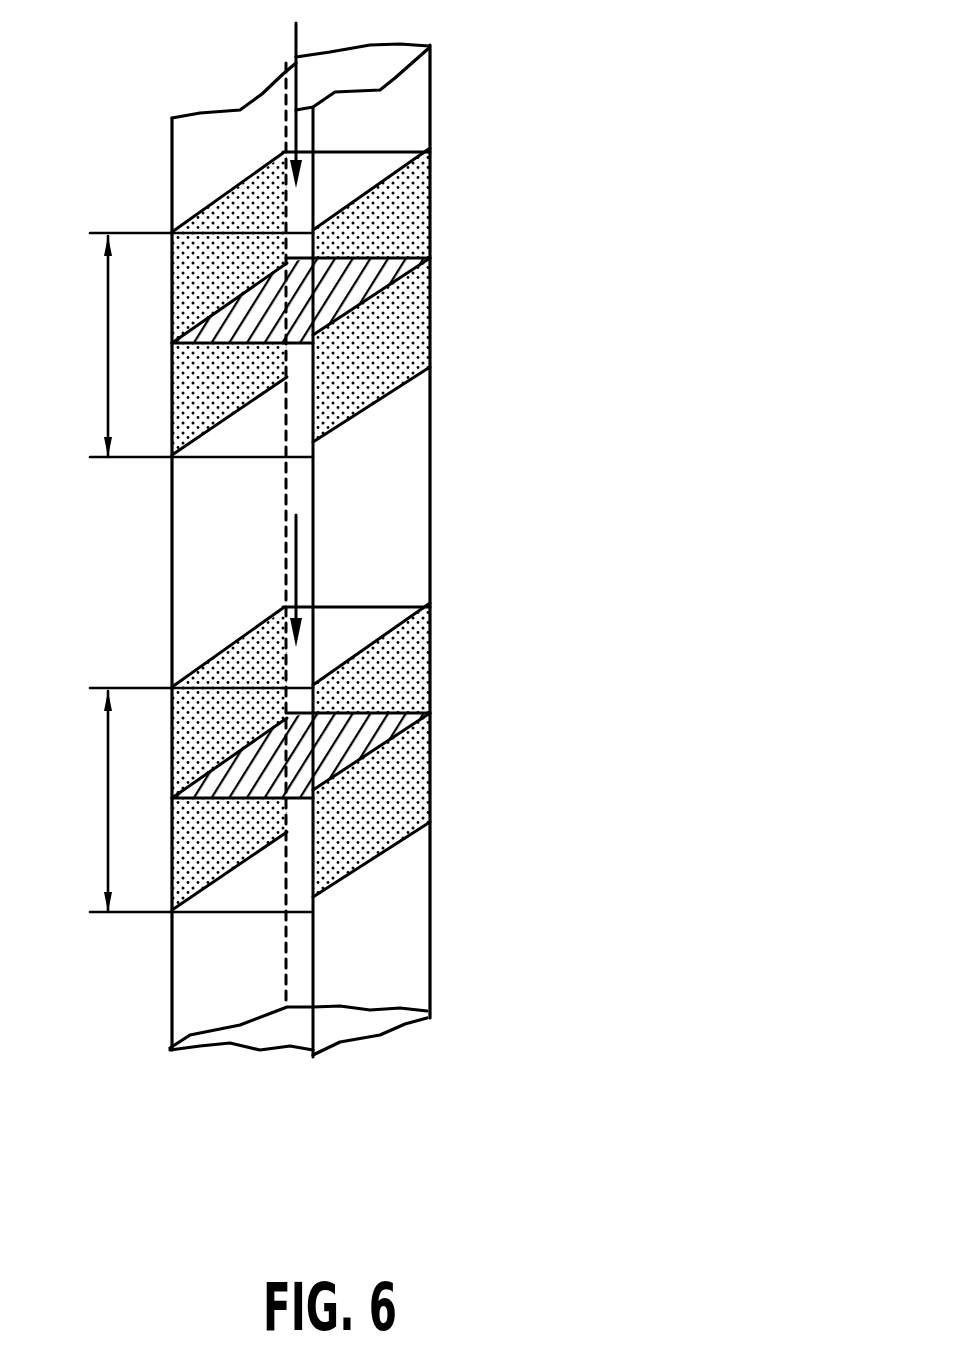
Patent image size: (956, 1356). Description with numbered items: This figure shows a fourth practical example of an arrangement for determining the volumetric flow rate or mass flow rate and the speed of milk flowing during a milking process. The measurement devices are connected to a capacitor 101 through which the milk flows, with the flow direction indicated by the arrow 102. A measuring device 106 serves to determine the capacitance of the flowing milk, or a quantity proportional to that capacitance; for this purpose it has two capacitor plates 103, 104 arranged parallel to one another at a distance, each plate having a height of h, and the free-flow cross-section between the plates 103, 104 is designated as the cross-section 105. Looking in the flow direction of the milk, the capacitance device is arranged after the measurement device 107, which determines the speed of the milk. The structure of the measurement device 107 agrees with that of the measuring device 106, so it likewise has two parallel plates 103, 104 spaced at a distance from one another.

The capacitor 101 is at (170, 118).
The arrow 102 is at (296, 38).
The capacitor plate 103 is at (313, 344).
The capacitor plate 104 is at (313, 378).
The free-flow cross-section 105 is at (432, 223).
The measuring device 106 is at (518, 125).
The measurement device 107 is at (542, 575).